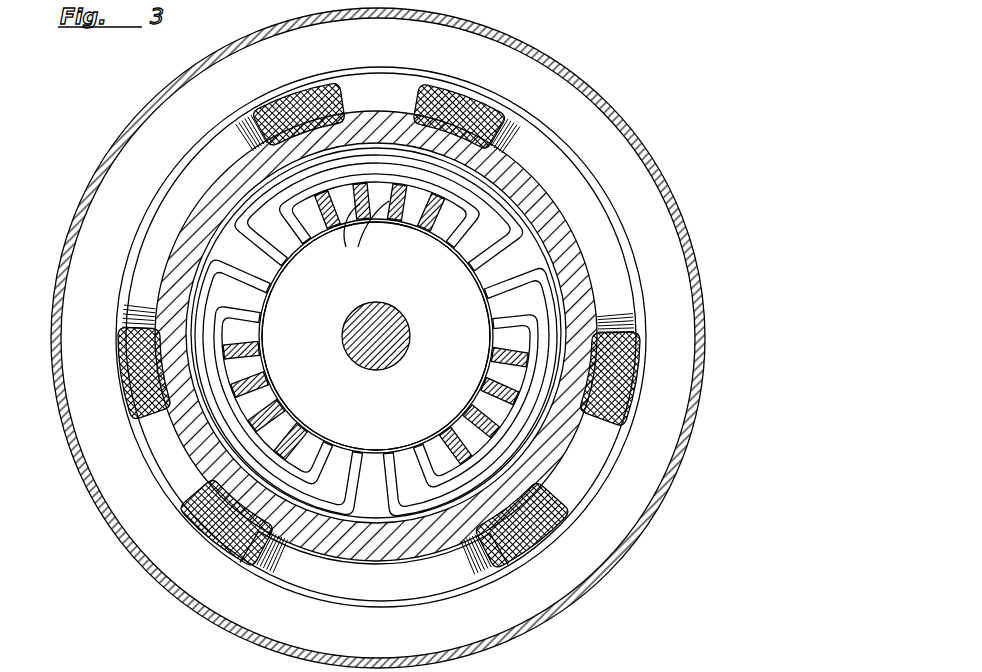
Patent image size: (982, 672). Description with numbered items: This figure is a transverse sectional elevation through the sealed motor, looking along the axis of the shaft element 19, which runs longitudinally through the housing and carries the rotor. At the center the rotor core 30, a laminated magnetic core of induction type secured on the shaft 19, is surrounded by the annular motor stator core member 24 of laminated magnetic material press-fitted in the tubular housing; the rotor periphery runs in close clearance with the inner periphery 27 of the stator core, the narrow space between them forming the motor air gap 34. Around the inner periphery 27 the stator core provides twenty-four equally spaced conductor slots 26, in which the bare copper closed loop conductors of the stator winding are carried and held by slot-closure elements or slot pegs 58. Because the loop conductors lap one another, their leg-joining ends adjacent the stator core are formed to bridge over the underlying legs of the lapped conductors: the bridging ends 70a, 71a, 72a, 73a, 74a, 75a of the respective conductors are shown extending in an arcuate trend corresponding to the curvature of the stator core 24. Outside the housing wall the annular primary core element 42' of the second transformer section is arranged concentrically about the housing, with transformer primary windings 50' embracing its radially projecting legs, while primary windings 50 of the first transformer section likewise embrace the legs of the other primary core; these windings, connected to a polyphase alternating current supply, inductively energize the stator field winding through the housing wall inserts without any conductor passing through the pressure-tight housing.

The shaft element 19 is at (342, 326).
The motor stator core member 24 is at (533, 250).
The conductor slots 26 is at (366, 233).
The inner periphery of the stator core 27 is at (484, 287).
The rotor core 30 is at (436, 402).
The motor air gap 34 is at (285, 270).
The primary core element 42' is at (375, 338).
The transformer primary winding 50 is at (379, 358).
The transformer primary winding 50' is at (385, 546).
The slot pegs 58 is at (424, 204).
The bridging end of loop conductor 70 70a is at (540, 413).
The bridging end of loop conductor 71 71a is at (517, 427).
The bridging end of loop conductor 72 72a is at (215, 402).
The bridging end of loop conductor 73 73a is at (237, 432).
The bridging end of loop conductor 74 74a is at (492, 180).
The bridging end of loop conductor 75 75a is at (453, 193).